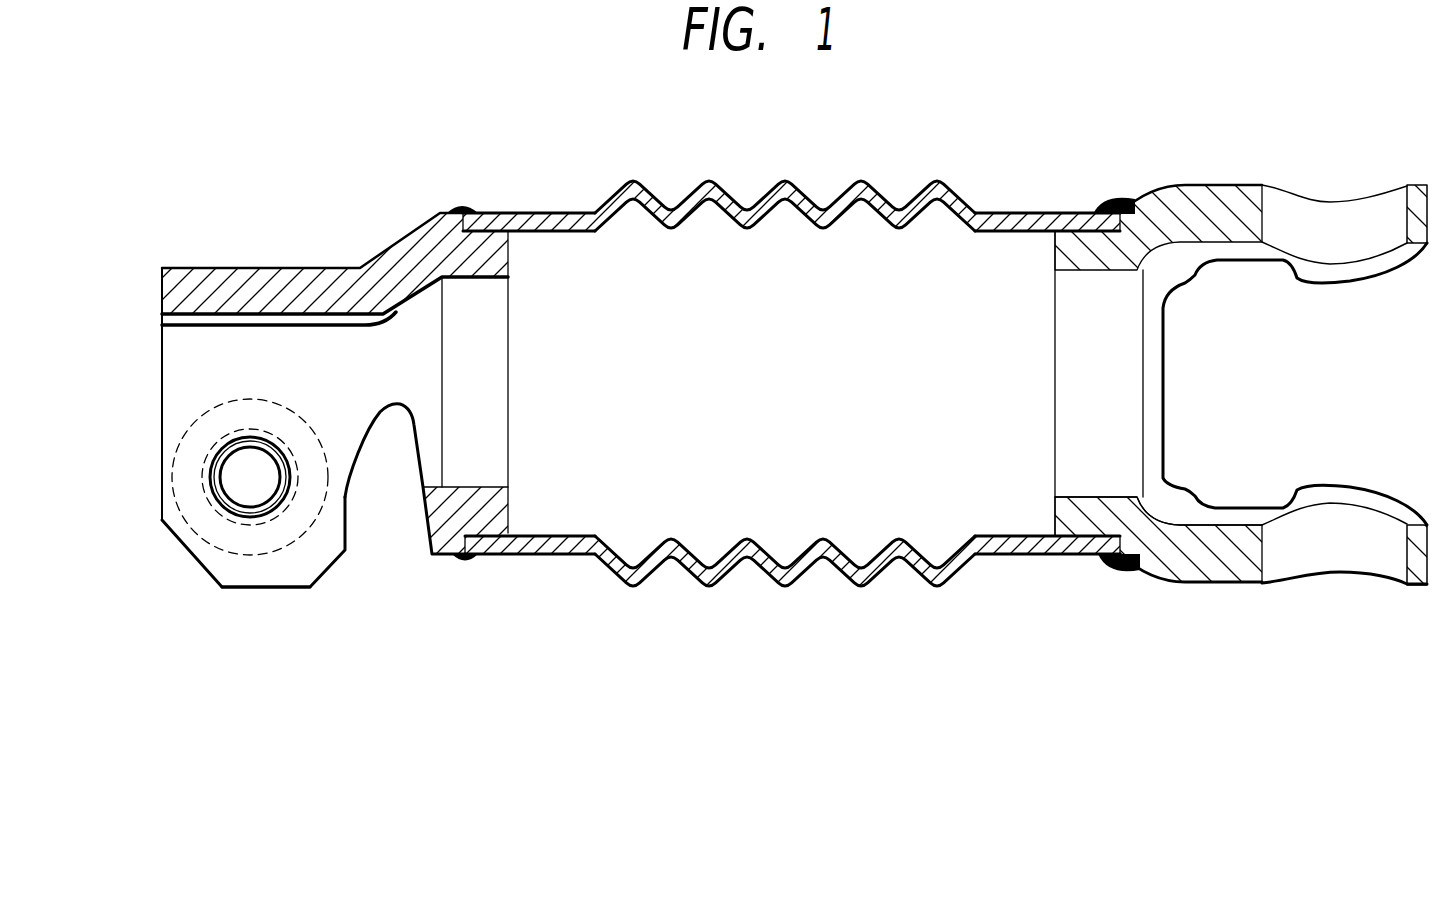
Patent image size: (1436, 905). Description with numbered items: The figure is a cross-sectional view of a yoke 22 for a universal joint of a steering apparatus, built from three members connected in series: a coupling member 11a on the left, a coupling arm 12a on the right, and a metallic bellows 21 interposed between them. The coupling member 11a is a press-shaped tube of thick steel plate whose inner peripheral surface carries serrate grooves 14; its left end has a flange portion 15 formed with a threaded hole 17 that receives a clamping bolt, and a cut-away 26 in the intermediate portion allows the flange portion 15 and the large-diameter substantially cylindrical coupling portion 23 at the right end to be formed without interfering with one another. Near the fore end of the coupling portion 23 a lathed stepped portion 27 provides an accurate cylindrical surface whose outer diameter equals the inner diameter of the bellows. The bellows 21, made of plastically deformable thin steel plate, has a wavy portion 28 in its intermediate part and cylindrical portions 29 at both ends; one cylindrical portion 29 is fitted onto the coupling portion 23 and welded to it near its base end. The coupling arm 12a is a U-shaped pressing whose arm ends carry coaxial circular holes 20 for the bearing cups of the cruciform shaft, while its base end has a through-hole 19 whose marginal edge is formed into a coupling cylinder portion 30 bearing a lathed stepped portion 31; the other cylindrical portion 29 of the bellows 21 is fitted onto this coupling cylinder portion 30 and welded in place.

The coupling member 11a is at (323, 402).
The coupling arm 12a is at (1241, 381).
The serrate grooves 14 is at (243, 311).
The flange portion 15 is at (300, 572).
The threaded hole 17 is at (228, 474).
The through-hole 19 is at (1115, 493).
The circular holes 20 is at (1360, 205).
The bellows 21 is at (733, 200).
The yoke 22 is at (791, 363).
The substantially cylindrical coupling portion 23 is at (432, 215).
The cut-aways 26 is at (398, 410).
The stepped portion 27 is at (495, 556).
The wavy portion 28 is at (780, 578).
The cylindrical portions 29 is at (565, 213).
The coupling cylinder portion 30 is at (1080, 560).
The stepped portion 31 is at (1082, 214).